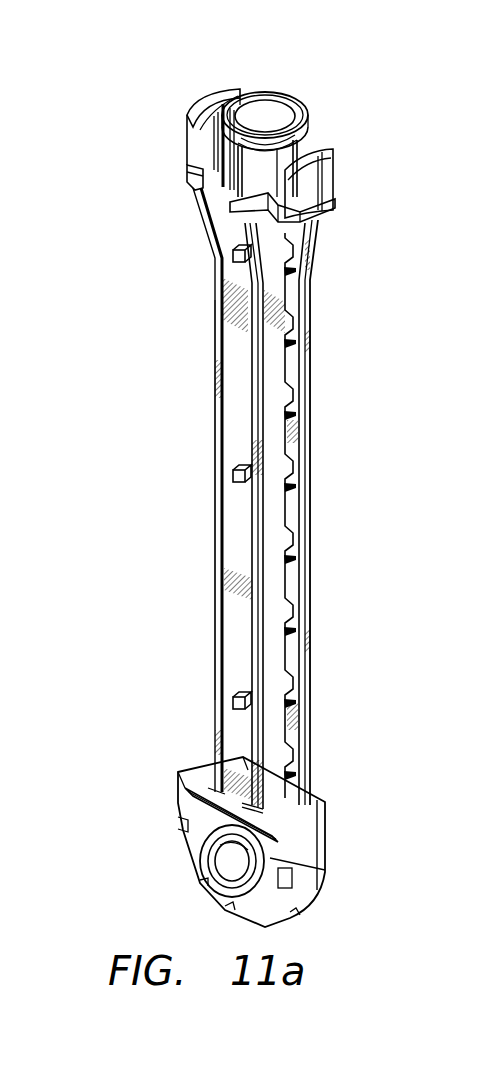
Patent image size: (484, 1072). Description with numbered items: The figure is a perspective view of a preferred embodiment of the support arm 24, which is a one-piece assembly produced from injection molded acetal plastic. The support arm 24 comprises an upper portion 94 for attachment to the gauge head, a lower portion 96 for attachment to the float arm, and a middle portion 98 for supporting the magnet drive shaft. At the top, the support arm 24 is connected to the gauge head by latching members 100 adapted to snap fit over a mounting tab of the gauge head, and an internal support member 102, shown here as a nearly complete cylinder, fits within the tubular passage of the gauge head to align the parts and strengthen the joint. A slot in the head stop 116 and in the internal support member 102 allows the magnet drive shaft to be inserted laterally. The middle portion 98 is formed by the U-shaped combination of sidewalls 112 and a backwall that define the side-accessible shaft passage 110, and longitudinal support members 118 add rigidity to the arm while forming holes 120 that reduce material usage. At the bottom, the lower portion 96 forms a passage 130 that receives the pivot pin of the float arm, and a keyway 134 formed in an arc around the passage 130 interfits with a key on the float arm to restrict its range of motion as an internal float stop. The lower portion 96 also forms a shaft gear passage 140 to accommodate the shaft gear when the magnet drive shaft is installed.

The support arm 24 is at (132, 60).
The upper portion 94 is at (152, 135).
The lower portion 96 is at (95, 828).
The middle portion 98 is at (160, 490).
The latching member 100 is at (218, 102).
The internal support member 102 is at (266, 110).
The side-accessible shaft passage 110 is at (236, 415).
The sidewalls 112 is at (270, 364).
The head stop 116 is at (200, 160).
The longitudinal support members 118 is at (292, 508).
The holes 120 is at (292, 610).
The passage 130 is at (232, 876).
The keyway 134 is at (215, 835).
The shaft gear passage 140 is at (190, 800).